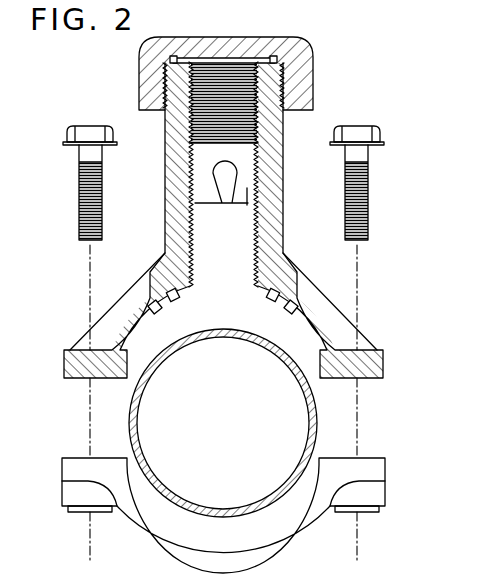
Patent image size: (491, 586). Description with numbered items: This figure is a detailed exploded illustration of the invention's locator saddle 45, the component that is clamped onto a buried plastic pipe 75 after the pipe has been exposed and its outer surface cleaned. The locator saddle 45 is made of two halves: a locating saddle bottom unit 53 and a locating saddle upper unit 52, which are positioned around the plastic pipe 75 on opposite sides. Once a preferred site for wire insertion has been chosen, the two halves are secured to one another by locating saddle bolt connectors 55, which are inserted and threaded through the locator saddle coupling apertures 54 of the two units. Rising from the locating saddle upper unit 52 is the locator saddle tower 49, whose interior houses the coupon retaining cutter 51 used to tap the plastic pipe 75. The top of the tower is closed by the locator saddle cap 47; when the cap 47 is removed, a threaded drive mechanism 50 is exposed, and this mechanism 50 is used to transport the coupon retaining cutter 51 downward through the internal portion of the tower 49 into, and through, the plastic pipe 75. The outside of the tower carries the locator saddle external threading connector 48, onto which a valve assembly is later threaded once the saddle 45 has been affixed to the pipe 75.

The locator saddle 45 is at (393, 580).
The locator saddle cap 47 is at (158, 76).
The locator saddle external threading connector 48 is at (283, 80).
The locator saddle tower 49 is at (272, 148).
The threaded drive mechanism 50 is at (195, 124).
The coupon retaining cutter 51 is at (240, 196).
The locating saddle upper unit 52 is at (358, 362).
The locating saddle bottom unit 53 is at (368, 463).
The locator saddle coupling apertures 54 is at (83, 512).
The locating saddle bolt connectors 55 is at (80, 190).
The plastic pipe 75 is at (170, 406).